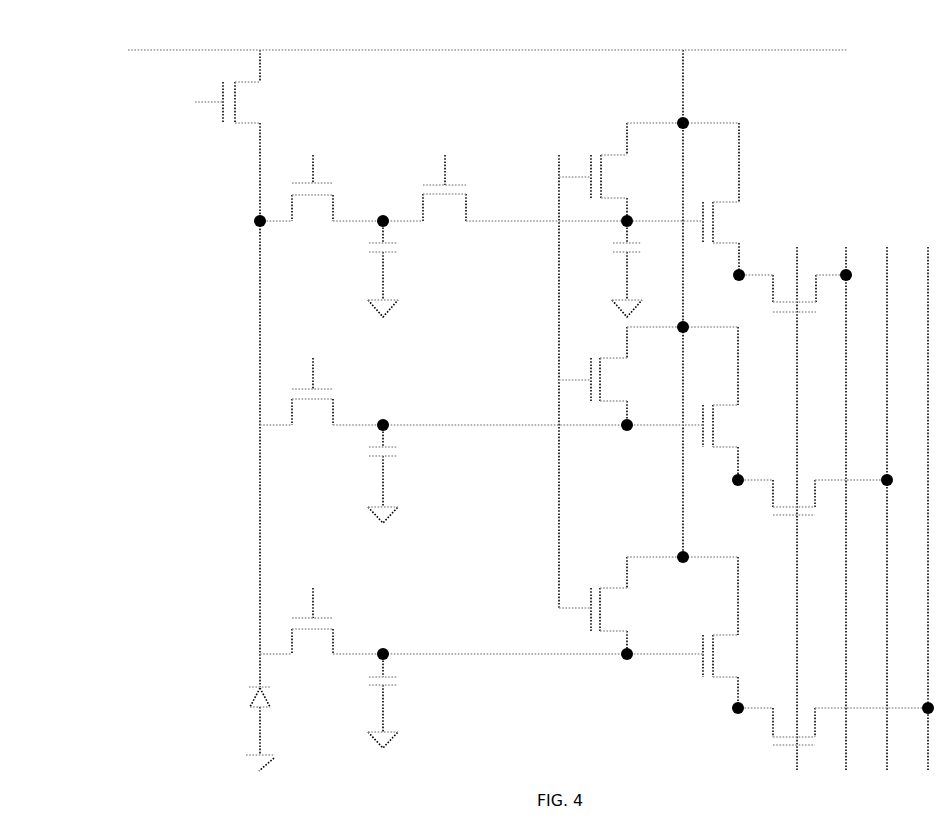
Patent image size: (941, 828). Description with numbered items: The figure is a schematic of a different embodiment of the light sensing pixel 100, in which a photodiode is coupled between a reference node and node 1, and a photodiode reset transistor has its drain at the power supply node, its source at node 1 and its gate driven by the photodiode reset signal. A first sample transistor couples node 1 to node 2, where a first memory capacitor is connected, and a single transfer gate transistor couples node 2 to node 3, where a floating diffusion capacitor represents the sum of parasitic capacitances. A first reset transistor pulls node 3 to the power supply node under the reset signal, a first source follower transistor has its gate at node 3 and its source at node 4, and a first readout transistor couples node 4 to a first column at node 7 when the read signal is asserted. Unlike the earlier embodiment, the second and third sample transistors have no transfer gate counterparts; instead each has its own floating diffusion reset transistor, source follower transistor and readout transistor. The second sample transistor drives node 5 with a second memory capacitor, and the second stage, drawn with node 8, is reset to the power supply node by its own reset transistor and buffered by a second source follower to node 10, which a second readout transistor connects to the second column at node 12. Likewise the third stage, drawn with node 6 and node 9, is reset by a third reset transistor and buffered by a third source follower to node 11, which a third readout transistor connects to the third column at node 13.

The light sensing pixel 100 is at (90, 239).
The node N1 1 is at (250, 209).
The node N2 2 is at (383, 209).
The node N3 3 is at (640, 212).
The node N4 4 is at (727, 285).
The node N5 5 is at (382, 414).
The node N6 6 is at (382, 644).
The node N7 7 is at (859, 285).
The node N8 8 is at (640, 415).
The node N9 9 is at (640, 645).
The node N10 10 is at (723, 490).
The node N11 11 is at (723, 719).
The node N12 12 is at (872, 490).
The node N13 13 is at (913, 721).